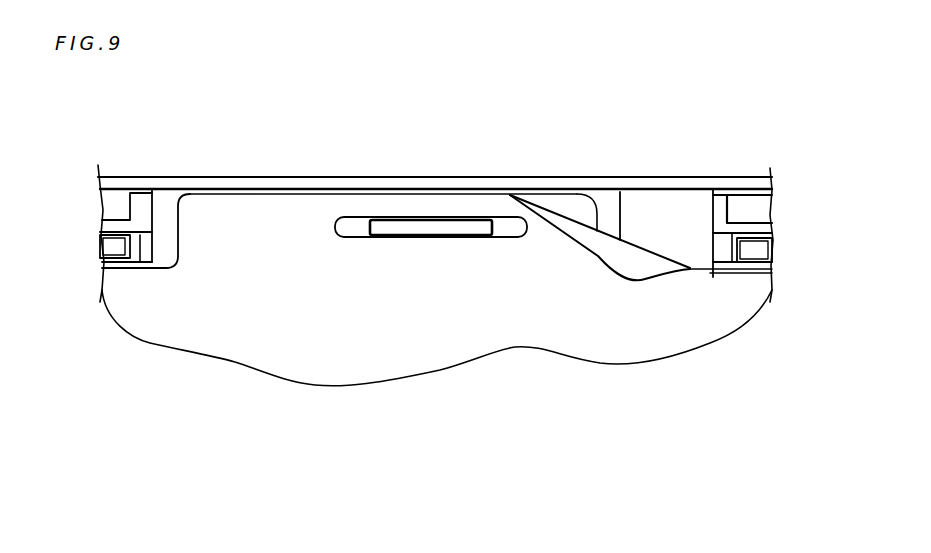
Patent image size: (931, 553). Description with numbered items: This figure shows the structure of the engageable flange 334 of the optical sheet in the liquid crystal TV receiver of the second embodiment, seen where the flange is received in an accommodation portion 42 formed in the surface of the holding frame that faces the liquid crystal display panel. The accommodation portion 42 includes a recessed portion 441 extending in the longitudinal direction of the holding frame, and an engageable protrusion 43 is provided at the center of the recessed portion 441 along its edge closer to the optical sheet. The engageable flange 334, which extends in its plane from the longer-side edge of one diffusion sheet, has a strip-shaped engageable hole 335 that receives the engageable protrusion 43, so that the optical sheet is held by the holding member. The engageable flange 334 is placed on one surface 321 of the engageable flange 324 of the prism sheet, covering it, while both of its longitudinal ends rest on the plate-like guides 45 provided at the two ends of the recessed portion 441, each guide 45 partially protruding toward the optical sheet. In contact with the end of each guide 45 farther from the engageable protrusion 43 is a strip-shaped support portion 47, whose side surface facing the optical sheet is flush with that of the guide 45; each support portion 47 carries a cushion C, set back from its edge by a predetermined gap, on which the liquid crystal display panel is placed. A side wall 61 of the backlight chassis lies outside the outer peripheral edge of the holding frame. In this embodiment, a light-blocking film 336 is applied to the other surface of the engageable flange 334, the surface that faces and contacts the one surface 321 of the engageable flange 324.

The accommodation portion 42 is at (331, 153).
The one surface of the engageable flange 324 321 is at (556, 205).
The engageable flange 334 is at (407, 207).
The engageable protrusion 43 is at (465, 227).
The engageable hole 335 is at (513, 223).
The light-blocking film 336 is at (607, 257).
The engageable flange 324 is at (597, 225).
The recessed portion 441 is at (607, 215).
The guide 45 is at (173, 228).
The support portion 47 is at (143, 243).
The side wall 61 is at (740, 185).
The cushion C is at (107, 247).